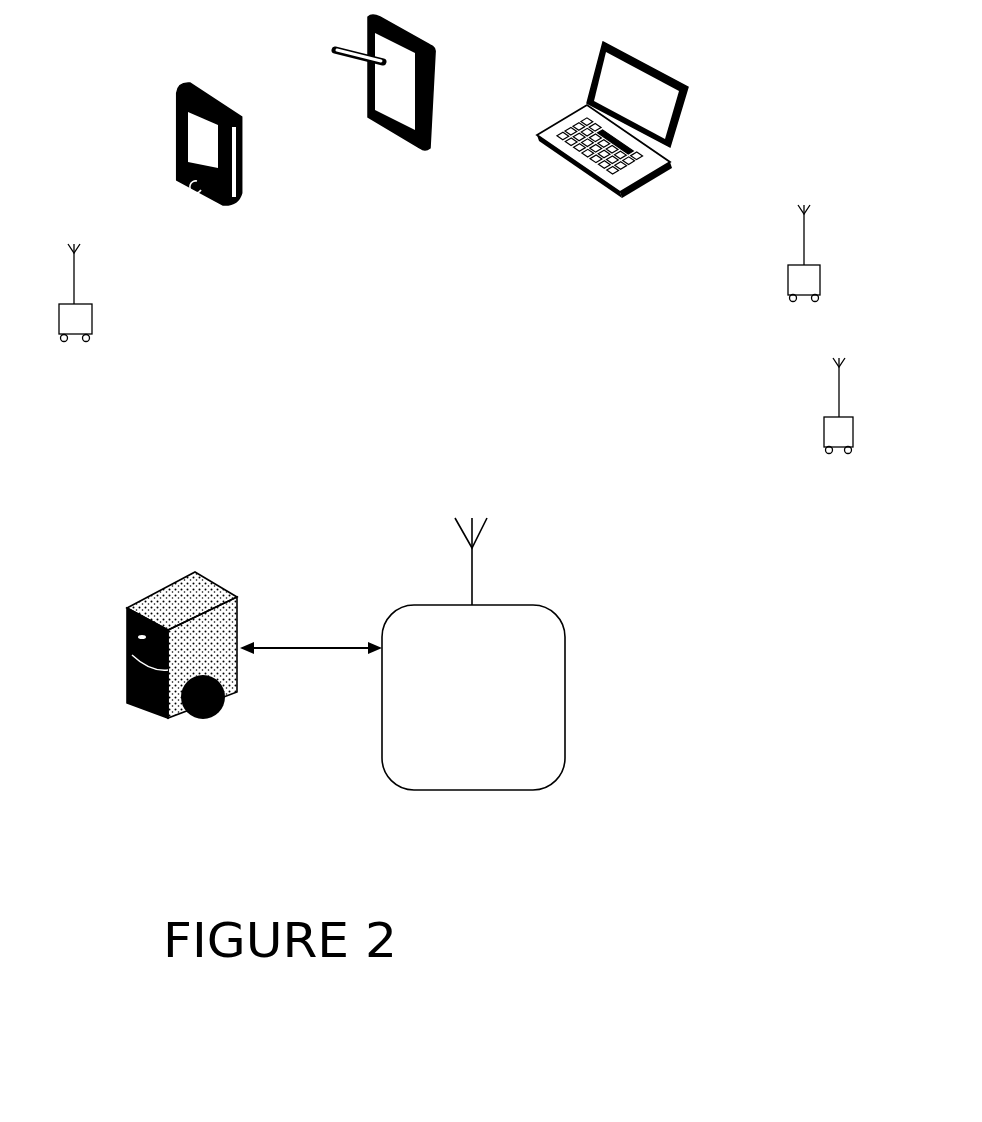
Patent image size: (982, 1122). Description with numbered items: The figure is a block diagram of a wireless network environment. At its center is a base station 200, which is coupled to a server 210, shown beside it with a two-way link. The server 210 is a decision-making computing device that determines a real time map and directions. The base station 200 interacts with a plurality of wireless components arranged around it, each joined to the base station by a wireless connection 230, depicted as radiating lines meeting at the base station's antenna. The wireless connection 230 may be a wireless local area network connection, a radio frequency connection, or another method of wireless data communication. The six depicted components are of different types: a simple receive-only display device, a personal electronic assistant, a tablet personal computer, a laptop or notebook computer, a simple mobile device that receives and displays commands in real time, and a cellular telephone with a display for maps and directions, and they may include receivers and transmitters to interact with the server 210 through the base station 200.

The base station 200 is at (493, 739).
The server 210 is at (254, 675).
The wireless connection 230 is at (503, 561).